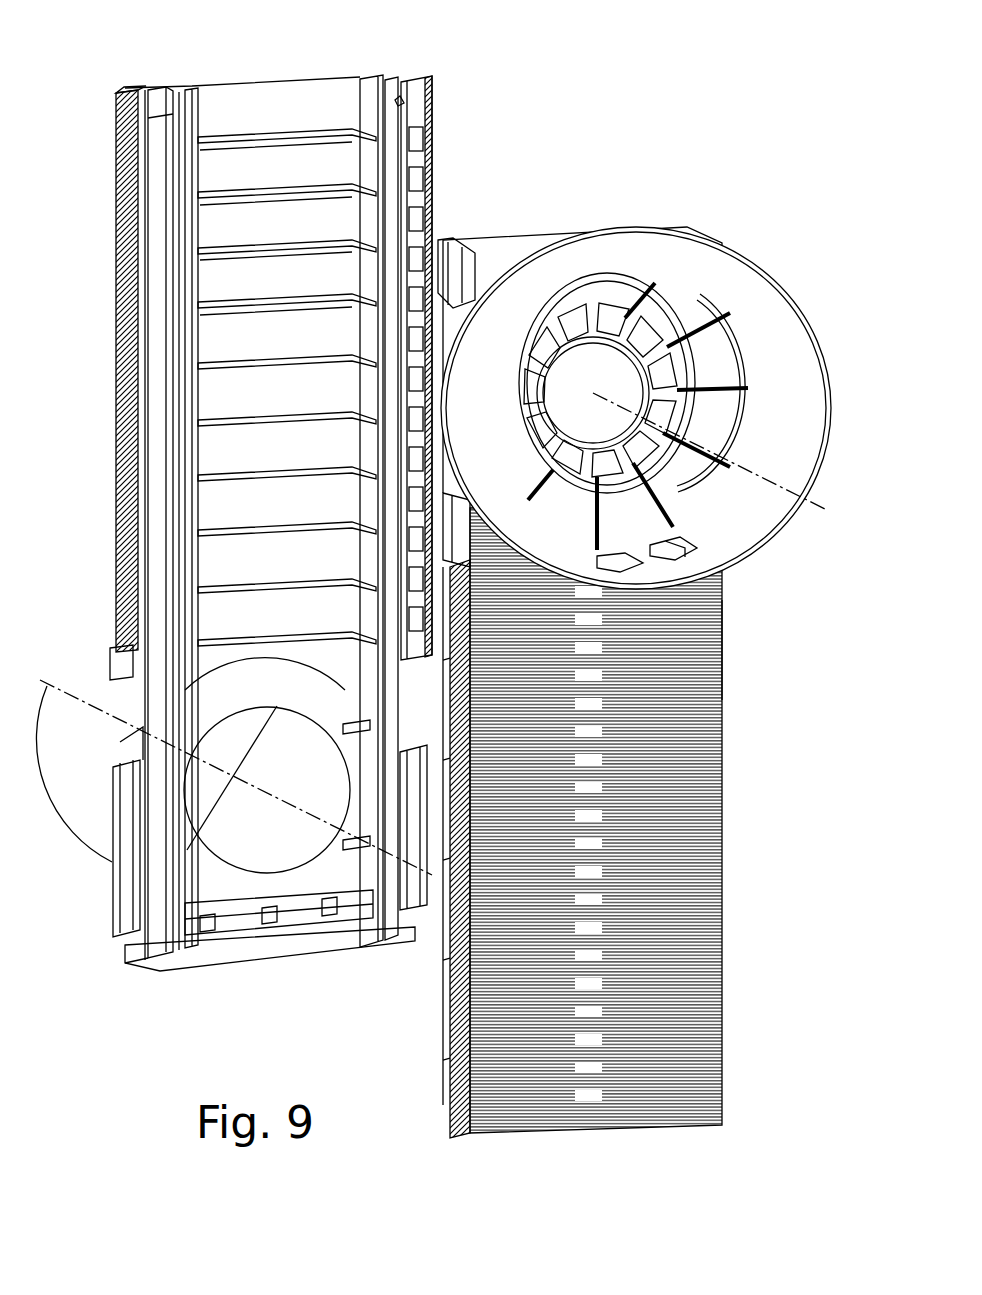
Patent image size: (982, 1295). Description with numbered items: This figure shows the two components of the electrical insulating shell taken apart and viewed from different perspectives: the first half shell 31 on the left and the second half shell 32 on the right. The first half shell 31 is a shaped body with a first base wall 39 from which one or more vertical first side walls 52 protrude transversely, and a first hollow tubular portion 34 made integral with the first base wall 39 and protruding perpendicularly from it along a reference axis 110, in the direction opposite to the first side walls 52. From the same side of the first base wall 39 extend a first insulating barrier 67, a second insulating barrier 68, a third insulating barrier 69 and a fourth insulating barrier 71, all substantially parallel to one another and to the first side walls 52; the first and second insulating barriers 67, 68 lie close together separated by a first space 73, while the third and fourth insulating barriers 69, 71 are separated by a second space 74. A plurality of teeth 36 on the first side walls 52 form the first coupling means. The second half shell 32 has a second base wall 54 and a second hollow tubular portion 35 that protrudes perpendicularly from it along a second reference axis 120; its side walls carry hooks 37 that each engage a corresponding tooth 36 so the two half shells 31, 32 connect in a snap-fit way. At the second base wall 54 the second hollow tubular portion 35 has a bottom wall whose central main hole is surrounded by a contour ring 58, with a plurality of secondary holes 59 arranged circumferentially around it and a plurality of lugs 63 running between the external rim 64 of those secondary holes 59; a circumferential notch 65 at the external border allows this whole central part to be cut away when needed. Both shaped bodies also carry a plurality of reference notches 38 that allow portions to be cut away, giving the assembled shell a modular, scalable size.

The first half shell 31 is at (110, 975).
The second half shell 32 is at (623, 451).
The first hollow tubular portion 34 is at (91, 793).
The second hollow tubular portion 35 is at (610, 833).
The teeth 36 is at (416, 179).
The hooks 37 is at (457, 268).
The reference notches 38 is at (276, 132).
The first base wall 39 is at (262, 329).
The first side walls 52 is at (116, 154).
The second base wall 54 is at (605, 1074).
The contour ring 58 is at (651, 380).
The secondary holes 59 is at (665, 421).
The lugs 63 is at (710, 316).
The external rim 64 is at (751, 369).
The notch 65 is at (669, 316).
The first insulating barrier 67 is at (370, 81).
The second insulating barrier 68 is at (363, 111).
The third insulating barrier 69 is at (180, 93).
The fourth insulating barrier 71 is at (157, 110).
The first space 73 is at (398, 101).
The second space 74 is at (183, 157).
The reference axis 110 is at (48, 679).
The reference axis 120 is at (823, 514).